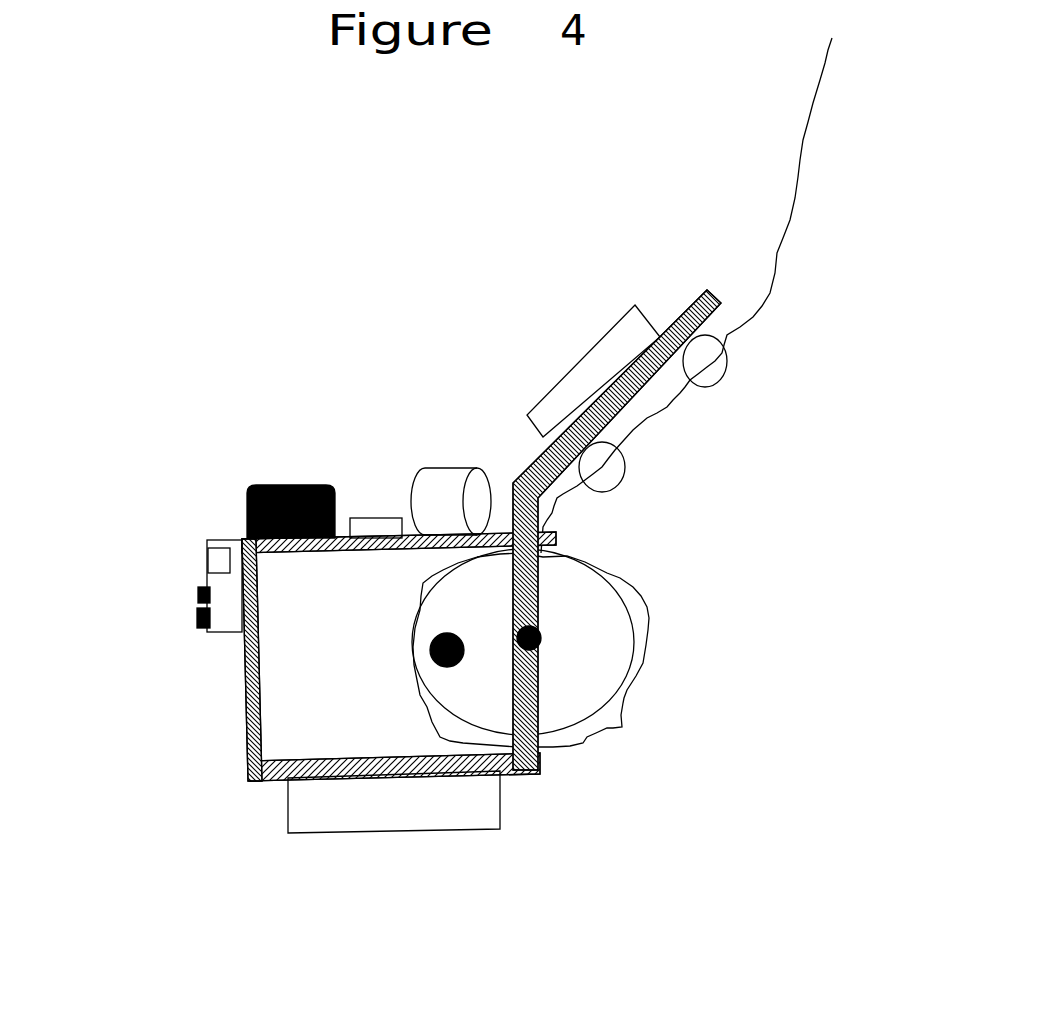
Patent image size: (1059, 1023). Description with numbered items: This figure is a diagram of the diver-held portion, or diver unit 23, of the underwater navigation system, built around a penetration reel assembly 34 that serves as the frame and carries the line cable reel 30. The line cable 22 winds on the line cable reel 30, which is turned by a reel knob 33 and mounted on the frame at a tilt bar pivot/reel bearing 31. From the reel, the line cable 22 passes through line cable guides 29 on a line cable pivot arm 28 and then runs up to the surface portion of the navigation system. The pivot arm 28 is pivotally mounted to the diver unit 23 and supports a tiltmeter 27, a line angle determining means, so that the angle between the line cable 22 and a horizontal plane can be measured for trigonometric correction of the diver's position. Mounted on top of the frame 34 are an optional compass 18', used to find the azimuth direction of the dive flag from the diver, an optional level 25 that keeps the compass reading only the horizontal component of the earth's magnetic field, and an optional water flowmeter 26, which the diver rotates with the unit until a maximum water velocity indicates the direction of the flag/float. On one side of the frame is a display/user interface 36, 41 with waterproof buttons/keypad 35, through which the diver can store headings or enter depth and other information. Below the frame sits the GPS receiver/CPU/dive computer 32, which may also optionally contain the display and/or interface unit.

The diver unit 23 is at (160, 129).
The line cable 22 is at (800, 183).
The optional compass 18' is at (184, 449).
The level 25 is at (372, 518).
The flowmeter 26 is at (440, 477).
The tiltmeter 27 is at (592, 368).
The line cable pivot arm 28 is at (690, 307).
The line cable guides 29 is at (622, 487).
The line cable reel 30 is at (602, 655).
The tilt bar pivot/reel bearing 31 is at (538, 653).
The GPS receiver/CPU/dive computer 32 is at (402, 817).
The reel knob 33 is at (438, 665).
The penetration reel assembly 34 is at (250, 720).
The waterproof buttons/keypad 35 is at (197, 627).
The display/user interface 36 is at (142, 586).
The display/user interface 41 is at (223, 575).